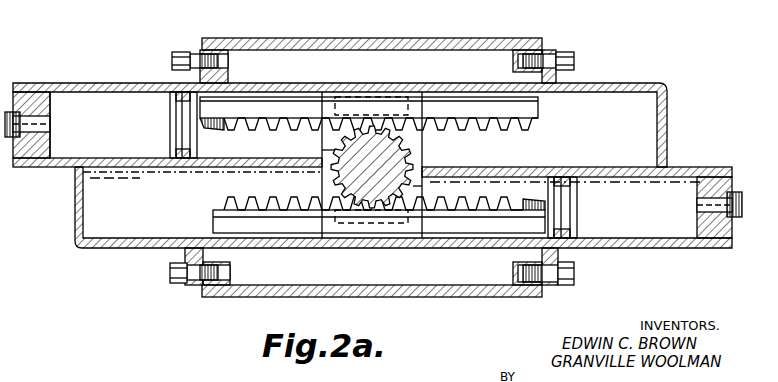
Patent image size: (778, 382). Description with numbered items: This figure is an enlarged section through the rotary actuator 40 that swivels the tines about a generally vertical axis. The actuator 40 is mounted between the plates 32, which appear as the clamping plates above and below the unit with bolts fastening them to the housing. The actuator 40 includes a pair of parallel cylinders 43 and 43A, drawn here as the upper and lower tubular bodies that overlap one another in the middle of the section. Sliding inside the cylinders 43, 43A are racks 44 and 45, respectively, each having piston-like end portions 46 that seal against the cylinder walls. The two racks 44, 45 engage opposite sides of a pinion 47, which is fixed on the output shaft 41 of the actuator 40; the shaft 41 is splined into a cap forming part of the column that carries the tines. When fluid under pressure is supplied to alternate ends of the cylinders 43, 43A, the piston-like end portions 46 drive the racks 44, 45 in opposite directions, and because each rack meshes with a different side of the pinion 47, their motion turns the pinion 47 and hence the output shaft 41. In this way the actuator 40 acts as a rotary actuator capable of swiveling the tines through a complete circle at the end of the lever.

The plates 32 is at (434, 22).
The actuator 40 is at (108, 254).
The output shaft 41 is at (422, 148).
The cylinder 43 is at (93, 83).
The cylinder 43A is at (632, 250).
The rack 44 is at (538, 108).
The rack 45 is at (213, 228).
The piston-like end portions 46 is at (170, 127).
The pinion 47 is at (335, 181).